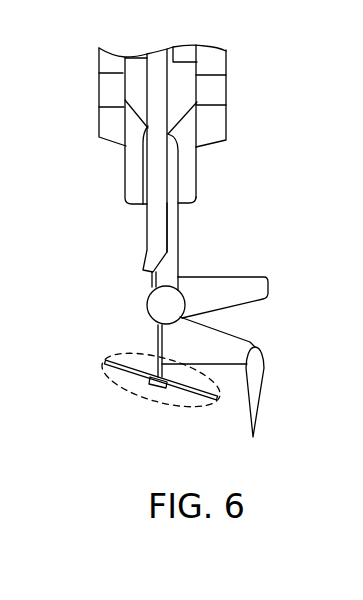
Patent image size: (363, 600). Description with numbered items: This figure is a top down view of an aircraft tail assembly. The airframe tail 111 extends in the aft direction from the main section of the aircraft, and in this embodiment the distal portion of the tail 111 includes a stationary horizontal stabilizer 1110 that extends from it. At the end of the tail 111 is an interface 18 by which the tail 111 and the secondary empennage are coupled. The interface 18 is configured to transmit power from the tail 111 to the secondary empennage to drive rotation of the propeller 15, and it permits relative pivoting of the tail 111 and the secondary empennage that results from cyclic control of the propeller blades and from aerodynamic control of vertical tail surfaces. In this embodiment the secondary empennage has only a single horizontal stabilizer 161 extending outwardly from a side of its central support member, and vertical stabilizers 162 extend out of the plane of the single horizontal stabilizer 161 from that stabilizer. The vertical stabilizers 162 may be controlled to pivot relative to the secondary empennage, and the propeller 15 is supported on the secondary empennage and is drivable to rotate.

The tail 111 is at (177, 257).
The stationary horizontal stabilizer 1110 is at (253, 285).
The interface 18 is at (152, 307).
The horizontal stabilizer 161 is at (253, 342).
The vertical stabilizers 162 is at (258, 377).
The propeller 15 is at (155, 386).